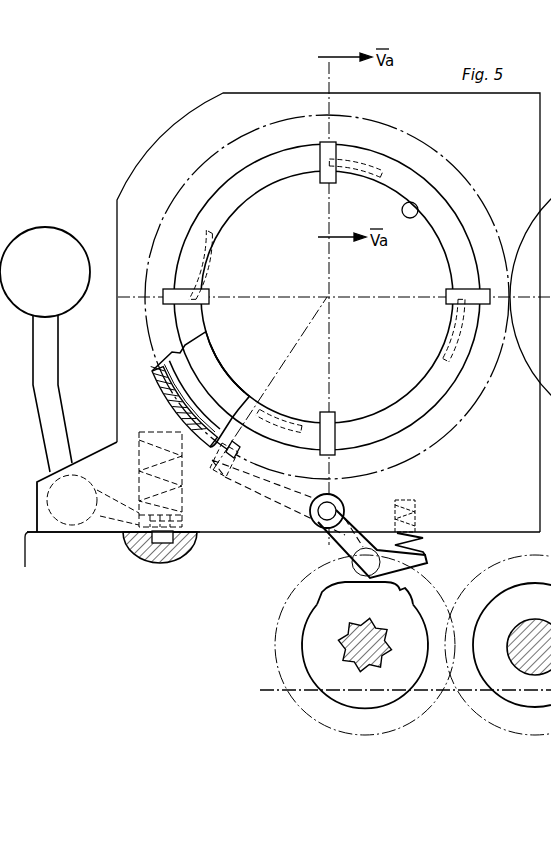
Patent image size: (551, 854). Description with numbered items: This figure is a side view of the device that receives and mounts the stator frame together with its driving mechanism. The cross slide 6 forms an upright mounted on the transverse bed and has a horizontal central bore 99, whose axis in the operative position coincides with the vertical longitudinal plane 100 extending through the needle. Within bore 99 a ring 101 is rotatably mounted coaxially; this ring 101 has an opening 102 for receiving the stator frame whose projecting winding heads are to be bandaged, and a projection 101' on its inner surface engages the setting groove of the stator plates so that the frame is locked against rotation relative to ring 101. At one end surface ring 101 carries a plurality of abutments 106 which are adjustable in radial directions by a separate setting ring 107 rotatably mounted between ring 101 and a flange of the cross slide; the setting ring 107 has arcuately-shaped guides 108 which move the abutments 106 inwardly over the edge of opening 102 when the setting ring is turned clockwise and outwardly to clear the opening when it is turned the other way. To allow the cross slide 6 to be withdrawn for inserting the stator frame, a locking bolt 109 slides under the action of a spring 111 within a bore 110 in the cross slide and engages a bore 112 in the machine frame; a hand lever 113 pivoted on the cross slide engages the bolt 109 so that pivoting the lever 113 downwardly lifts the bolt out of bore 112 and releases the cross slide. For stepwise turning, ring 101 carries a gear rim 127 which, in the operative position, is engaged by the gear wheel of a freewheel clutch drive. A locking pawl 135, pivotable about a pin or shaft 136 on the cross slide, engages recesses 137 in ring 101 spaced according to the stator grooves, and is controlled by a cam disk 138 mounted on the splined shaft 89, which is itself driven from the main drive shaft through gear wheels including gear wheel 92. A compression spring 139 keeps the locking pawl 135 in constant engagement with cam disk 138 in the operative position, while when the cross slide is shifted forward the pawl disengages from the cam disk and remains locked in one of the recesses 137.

The cross slide 6 is at (218, 123).
The gear rim 127 is at (440, 150).
The hand lever 113 is at (50, 238).
The vertical longitudinal plane 100 is at (327, 262).
The setting ring 107 is at (437, 403).
The abutments 106 is at (320, 183).
The arcuately-shaped guides 108 is at (375, 178).
The projection 101' is at (409, 231).
The opening 102 is at (203, 347).
The ring 101 is at (243, 368).
The horizontal central bore 99 is at (152, 385).
The spring 111 is at (139, 432).
The bore 110 is at (139, 464).
The bore 112 is at (197, 552).
The locking bolt 109 is at (150, 563).
The recesses 137 is at (212, 461).
The locking pawl 135 is at (285, 490).
The pin or shaft 136 is at (317, 523).
The cam disk 138 is at (402, 610).
The compression spring 139 is at (418, 543).
The gear wheel 92 is at (290, 662).
The splined shaft 89 is at (352, 645).